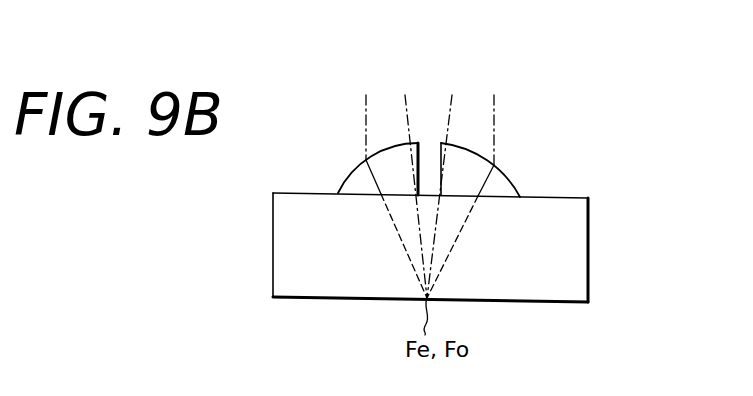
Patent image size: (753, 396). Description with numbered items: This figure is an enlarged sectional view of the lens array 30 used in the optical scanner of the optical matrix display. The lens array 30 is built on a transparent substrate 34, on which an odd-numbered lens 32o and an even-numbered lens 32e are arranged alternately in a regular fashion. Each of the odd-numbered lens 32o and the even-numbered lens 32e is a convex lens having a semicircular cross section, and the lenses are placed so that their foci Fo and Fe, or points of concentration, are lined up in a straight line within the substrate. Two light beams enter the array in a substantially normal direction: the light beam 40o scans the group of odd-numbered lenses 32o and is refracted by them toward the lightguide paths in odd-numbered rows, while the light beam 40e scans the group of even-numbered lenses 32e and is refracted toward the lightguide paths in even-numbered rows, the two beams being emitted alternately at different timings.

The lens array 30 is at (475, 222).
The transparent substrate 34 is at (577, 280).
The even-numbered lens 32e is at (357, 182).
The odd-numbered lens 32o is at (600, 203).
The light beam for even-numbered lenses 40e is at (378, 108).
The light beam for odd-numbered lenses 40o is at (486, 110).